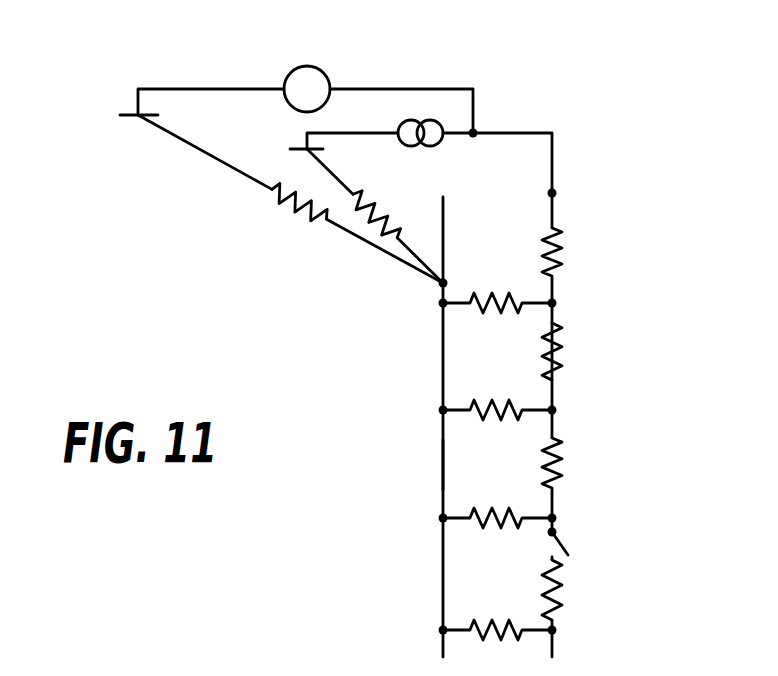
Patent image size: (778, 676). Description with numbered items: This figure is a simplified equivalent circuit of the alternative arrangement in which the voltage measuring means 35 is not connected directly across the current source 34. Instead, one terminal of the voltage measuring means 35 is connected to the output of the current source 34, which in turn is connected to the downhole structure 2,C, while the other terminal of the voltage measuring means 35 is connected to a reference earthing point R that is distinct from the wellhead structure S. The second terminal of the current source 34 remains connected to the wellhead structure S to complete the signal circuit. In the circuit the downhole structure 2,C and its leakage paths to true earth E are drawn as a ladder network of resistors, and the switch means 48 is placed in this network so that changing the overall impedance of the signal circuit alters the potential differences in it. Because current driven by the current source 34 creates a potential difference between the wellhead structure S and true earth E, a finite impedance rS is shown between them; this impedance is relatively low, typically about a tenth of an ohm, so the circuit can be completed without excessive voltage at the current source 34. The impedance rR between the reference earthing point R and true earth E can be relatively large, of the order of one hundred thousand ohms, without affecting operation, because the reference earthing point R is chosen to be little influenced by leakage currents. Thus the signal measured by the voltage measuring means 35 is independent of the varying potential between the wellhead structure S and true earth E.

The reference earthing point R is at (126, 114).
The wellhead structure S is at (291, 147).
The impedance between reference earth and true earth rR is at (288, 206).
The impedance between wellhead structure and true earth rS is at (374, 207).
The voltage measuring means 35 is at (308, 66).
The current source 34 is at (443, 143).
The true earth E is at (443, 465).
The downhole structure 2,C is at (562, 320).
The switch means 48 is at (561, 536).